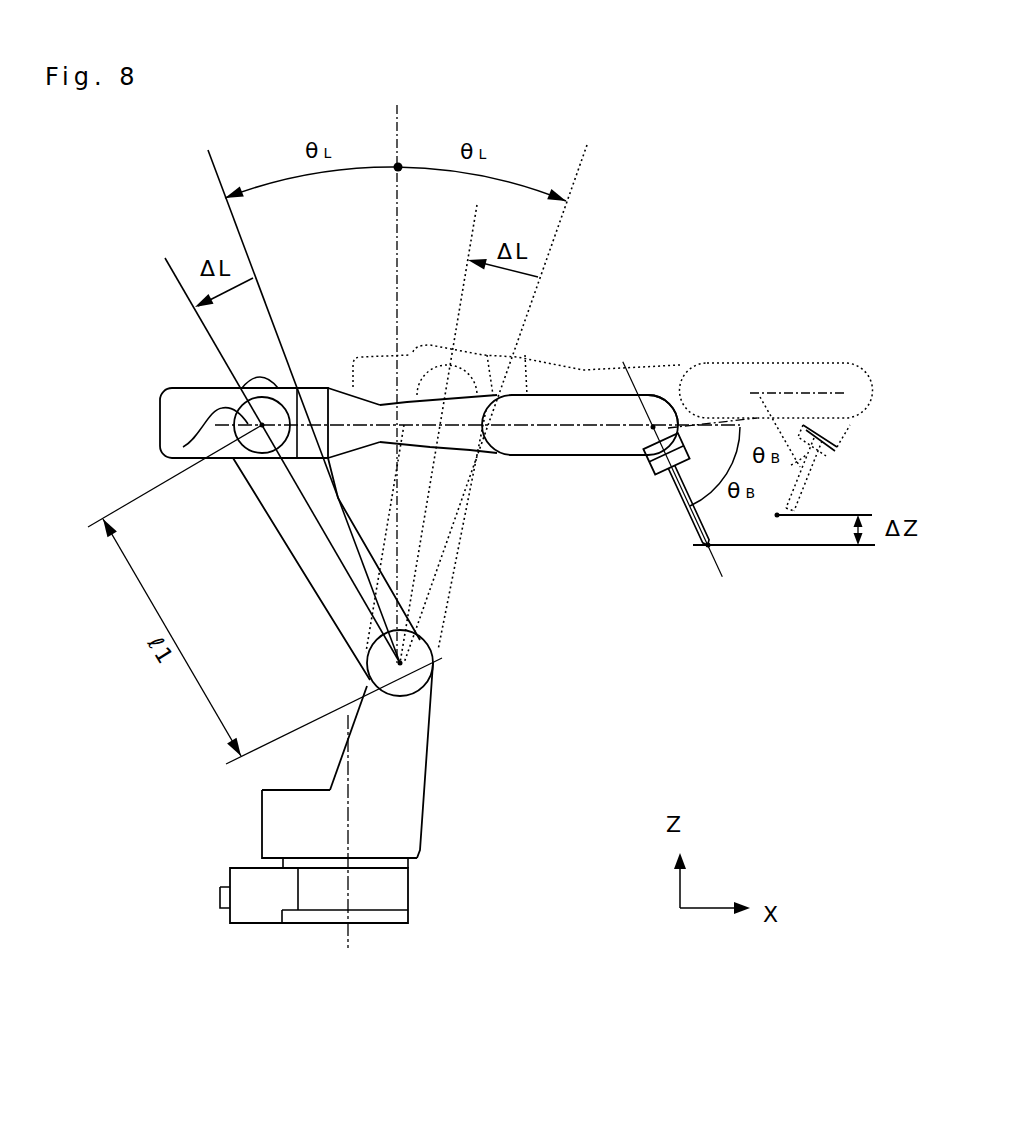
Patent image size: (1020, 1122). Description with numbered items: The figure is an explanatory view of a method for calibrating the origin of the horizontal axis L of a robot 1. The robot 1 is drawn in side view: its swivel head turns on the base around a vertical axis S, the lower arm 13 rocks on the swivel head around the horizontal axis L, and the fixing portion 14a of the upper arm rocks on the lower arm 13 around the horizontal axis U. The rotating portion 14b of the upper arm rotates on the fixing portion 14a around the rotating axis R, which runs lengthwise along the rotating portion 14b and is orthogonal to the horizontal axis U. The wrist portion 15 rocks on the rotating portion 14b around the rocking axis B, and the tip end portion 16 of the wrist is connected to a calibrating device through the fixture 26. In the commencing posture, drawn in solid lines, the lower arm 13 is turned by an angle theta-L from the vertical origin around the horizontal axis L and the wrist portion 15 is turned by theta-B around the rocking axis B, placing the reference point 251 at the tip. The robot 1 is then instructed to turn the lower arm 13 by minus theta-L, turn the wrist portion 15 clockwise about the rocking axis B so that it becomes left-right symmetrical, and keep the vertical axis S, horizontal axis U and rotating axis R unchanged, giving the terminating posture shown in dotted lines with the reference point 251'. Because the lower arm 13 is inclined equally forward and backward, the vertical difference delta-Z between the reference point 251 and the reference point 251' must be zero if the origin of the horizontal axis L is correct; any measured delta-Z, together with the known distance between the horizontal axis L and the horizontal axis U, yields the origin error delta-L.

The robot 1 is at (418, 845).
The lower arm 13 is at (282, 518).
The fixing portion of the upper arm 14a is at (190, 418).
The rotating portion of the upper arm 14b is at (530, 413).
The wrist portion 15 is at (677, 430).
The tip end portion of the wrist 16 is at (648, 463).
The fixture 26 is at (685, 503).
The reference point 251 is at (735, 563).
The reference point at the terminating posture 251' is at (848, 564).
The vertical axis S is at (348, 812).
The horizontal axis L is at (433, 662).
The horizontal axis U is at (170, 457).
The rotating axis R is at (353, 423).
The rocking axis B is at (657, 427).